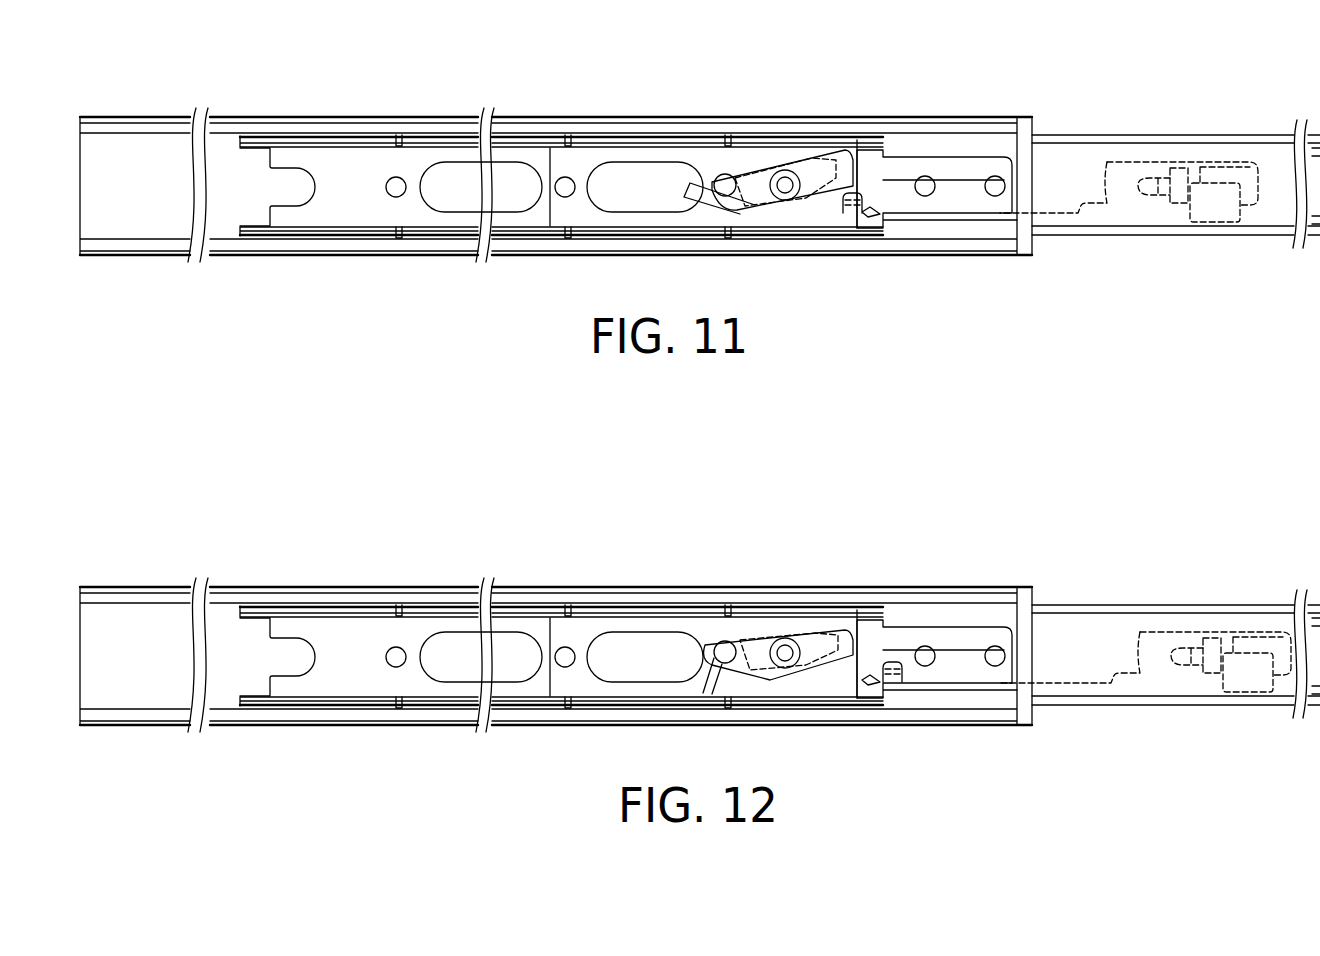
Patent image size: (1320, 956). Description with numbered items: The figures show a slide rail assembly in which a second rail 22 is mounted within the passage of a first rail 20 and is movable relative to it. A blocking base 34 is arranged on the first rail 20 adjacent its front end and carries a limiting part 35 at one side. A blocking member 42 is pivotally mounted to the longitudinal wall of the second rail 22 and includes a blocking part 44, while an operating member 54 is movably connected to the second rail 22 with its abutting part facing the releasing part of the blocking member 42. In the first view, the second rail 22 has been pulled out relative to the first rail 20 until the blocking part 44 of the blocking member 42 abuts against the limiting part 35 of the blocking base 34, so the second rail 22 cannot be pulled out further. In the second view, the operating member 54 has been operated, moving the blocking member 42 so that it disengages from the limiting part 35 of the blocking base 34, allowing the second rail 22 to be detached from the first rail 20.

In FIG. 11, the first rail 20 is at (533, 115).
In FIG. 12, the first rail 20 is at (556, 624).
In FIG. 11, the second rail 22 is at (1240, 128).
In FIG. 12, the second rail 22 is at (1176, 625).
In FIG. 11, the blocking base 34 is at (976, 170).
In FIG. 12, the blocking base 34 is at (938, 609).
In FIG. 11, the limiting part 35 is at (856, 158).
In FIG. 12, the limiting part 35 is at (843, 609).
In FIG. 11, the blocking member 42 is at (758, 165).
In FIG. 12, the blocking member 42 is at (778, 607).
In FIG. 11, the blocking part 44 is at (864, 160).
In FIG. 12, the blocking part 44 is at (882, 603).
In FIG. 11, the operating member 54 is at (1199, 205).
In FIG. 12, the operating member 54 is at (1152, 697).